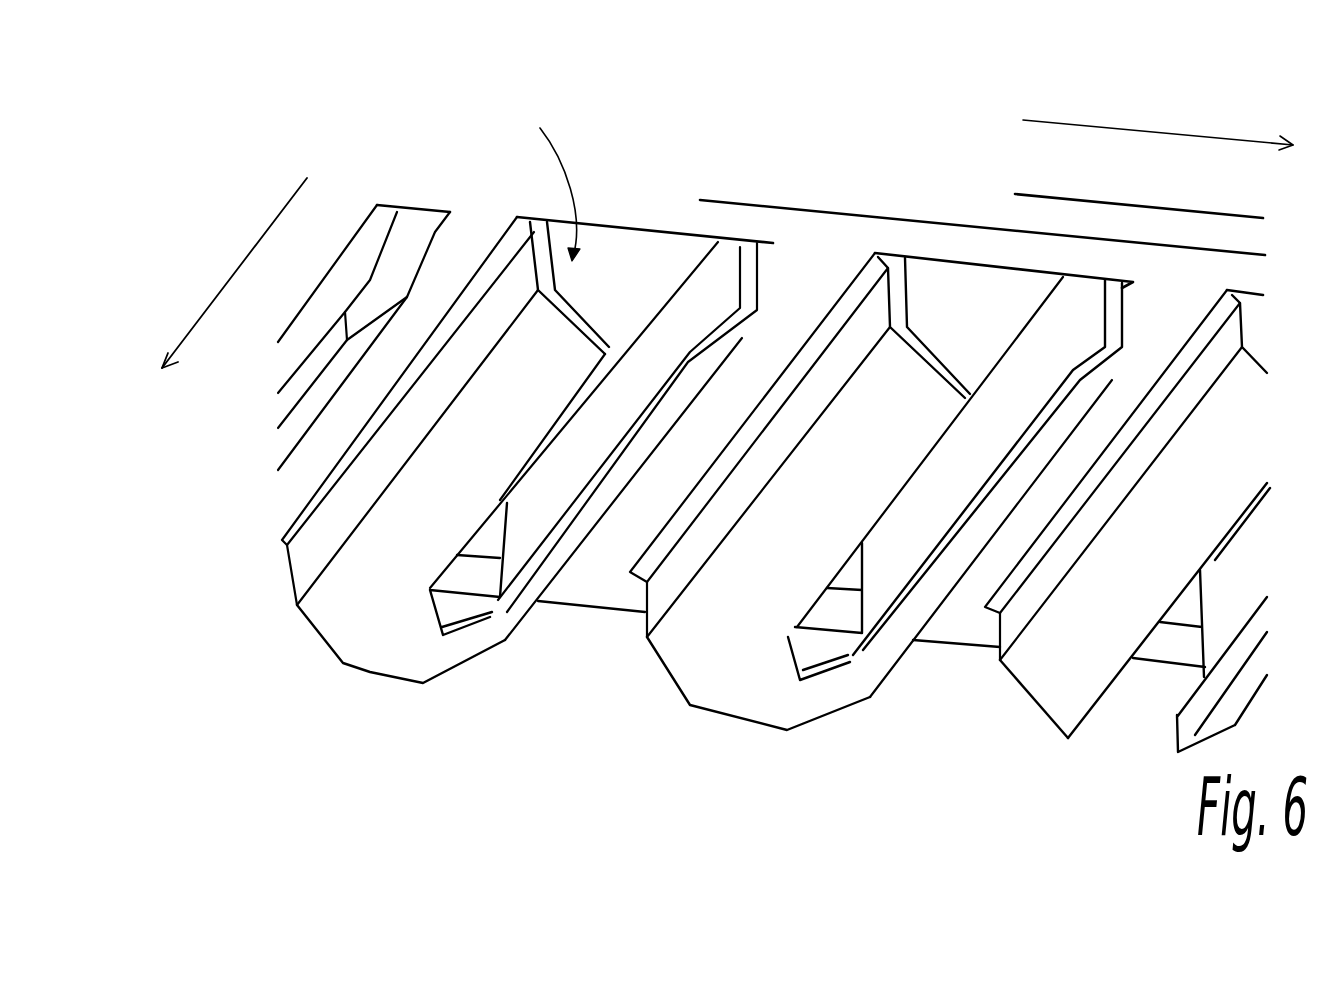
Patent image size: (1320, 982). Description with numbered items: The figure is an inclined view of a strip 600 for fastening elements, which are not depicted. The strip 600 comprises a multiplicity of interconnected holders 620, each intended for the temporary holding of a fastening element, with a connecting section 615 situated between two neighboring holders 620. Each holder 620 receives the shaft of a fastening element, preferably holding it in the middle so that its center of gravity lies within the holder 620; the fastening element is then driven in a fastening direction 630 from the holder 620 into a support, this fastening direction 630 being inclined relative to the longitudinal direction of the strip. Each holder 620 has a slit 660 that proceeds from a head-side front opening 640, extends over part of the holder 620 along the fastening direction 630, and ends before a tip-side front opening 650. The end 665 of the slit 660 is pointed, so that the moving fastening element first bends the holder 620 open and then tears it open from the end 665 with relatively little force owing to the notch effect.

The strip 600 is at (389, 149).
The connecting section 615 is at (810, 260).
The holder 620 is at (367, 607).
The fastening direction 630 is at (234, 273).
The head-side front opening 640 is at (1163, 103).
The tip-side front opening 650 is at (421, 684).
The slit 660 is at (638, 371).
The end of the slit 665 is at (487, 623).